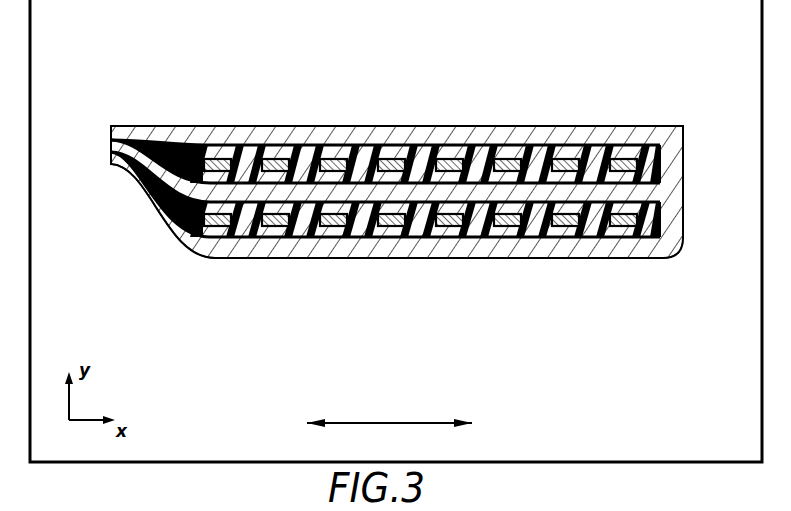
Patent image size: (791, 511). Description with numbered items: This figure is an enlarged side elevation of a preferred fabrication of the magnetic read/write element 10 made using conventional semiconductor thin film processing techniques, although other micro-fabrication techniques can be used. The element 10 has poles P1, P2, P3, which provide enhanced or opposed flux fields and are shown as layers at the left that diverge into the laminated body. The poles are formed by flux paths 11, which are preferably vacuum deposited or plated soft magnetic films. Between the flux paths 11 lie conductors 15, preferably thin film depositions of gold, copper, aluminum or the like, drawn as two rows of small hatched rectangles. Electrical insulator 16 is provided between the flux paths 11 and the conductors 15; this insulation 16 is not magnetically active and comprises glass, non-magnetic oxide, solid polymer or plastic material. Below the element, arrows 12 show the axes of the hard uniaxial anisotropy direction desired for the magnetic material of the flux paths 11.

The magnetic read/write element 10 is at (397, 183).
The flux paths 11 is at (466, 192).
The arrows 12 is at (388, 422).
The conductors 15 is at (336, 157).
The electrical insulator 16 is at (655, 148).
The pole P1 is at (111, 132).
The pole P2 is at (111, 147).
The pole P3 is at (111, 166).